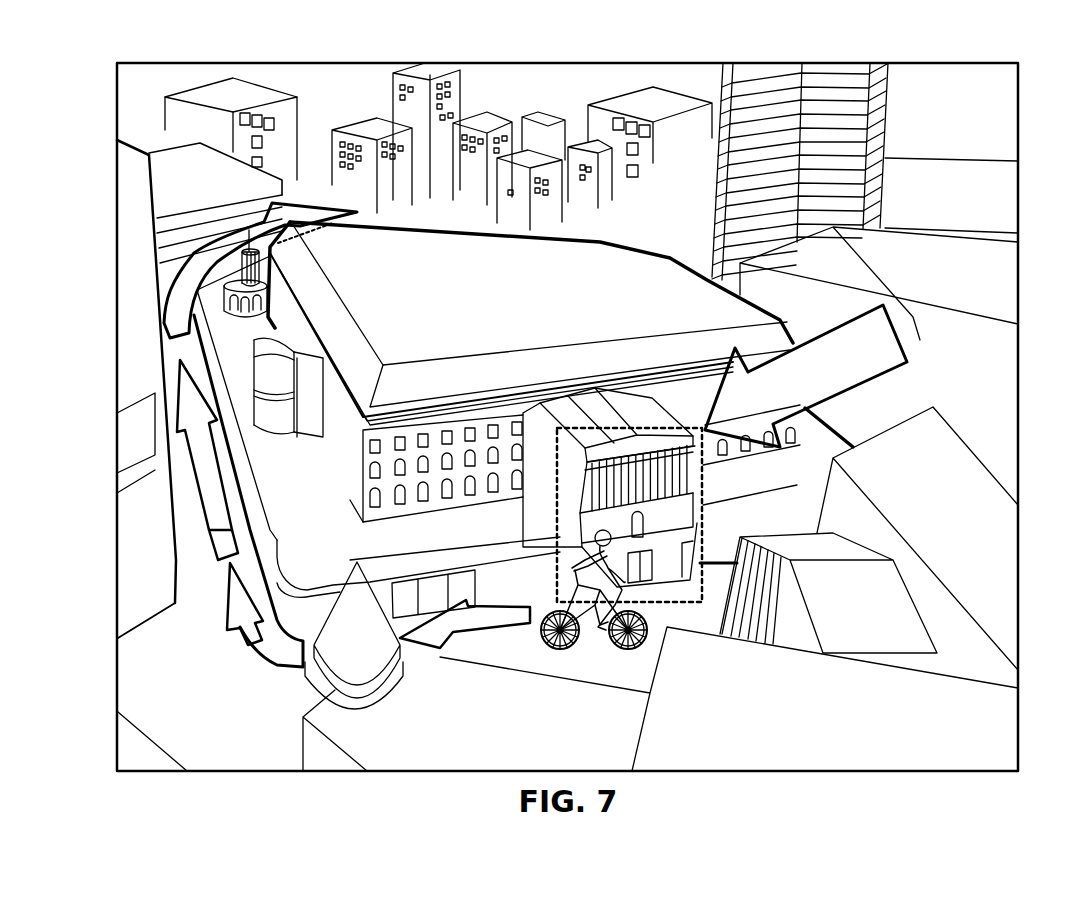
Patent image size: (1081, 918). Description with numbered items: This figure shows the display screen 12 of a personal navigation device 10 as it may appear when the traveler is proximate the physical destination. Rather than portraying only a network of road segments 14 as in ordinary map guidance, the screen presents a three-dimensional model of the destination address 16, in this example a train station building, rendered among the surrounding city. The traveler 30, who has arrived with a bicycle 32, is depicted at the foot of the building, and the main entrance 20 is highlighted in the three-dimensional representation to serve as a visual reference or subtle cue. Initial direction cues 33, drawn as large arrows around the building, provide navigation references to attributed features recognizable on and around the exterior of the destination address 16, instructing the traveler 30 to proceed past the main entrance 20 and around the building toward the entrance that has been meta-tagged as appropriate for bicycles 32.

The navigation device 10 is at (116, 106).
The display screen 12 is at (970, 112).
The network of road segments 14 is at (187, 702).
The destination address 16 is at (467, 303).
The main entrance 20 is at (705, 518).
The traveler 30 is at (595, 565).
The bicycle 32 is at (551, 652).
The initial direction cues 33 is at (232, 240).